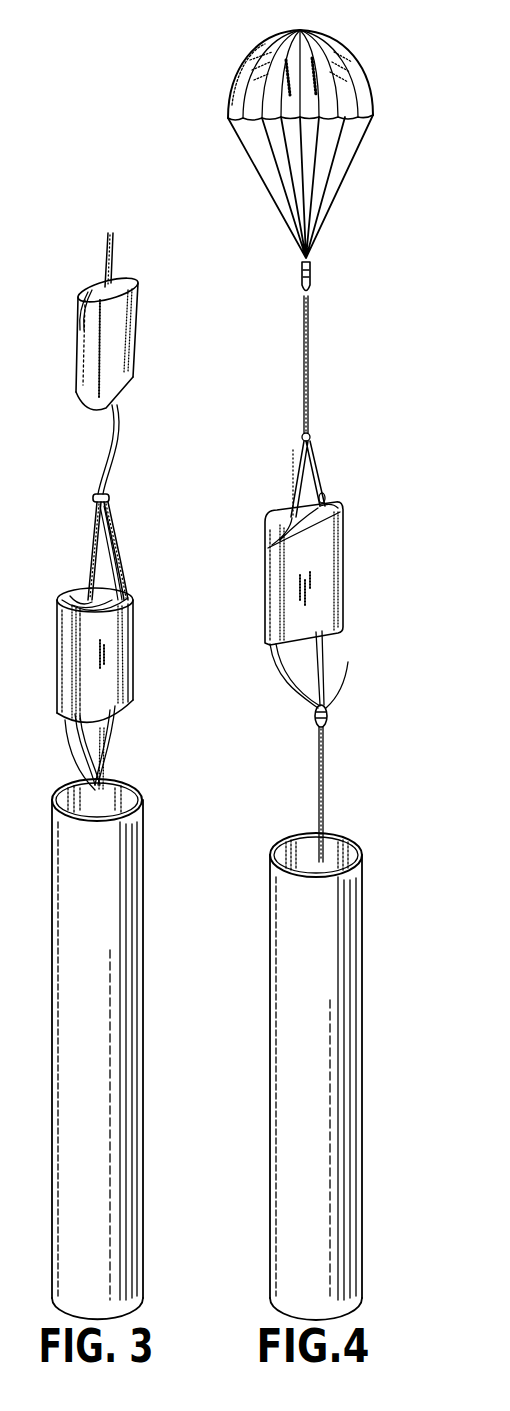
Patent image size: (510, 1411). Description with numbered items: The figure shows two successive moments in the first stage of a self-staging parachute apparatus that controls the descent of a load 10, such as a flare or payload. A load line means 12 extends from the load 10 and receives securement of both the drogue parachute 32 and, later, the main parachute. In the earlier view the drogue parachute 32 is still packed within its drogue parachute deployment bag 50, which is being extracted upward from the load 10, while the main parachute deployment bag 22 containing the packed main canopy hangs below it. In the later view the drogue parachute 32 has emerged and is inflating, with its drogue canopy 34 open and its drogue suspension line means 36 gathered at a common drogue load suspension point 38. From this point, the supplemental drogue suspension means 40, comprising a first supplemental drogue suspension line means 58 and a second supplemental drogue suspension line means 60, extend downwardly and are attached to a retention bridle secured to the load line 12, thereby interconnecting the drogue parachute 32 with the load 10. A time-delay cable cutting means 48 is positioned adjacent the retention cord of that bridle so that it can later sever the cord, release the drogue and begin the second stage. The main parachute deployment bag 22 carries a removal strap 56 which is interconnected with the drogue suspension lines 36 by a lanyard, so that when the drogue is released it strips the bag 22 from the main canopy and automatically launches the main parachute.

In FIG. 4, the load 10 is at (274, 964).
In FIG. 3, the load 10 is at (65, 967).
In FIG. 4, the load line means 12 is at (324, 782).
In FIG. 3, the load line means 12 is at (120, 790).
In FIG. 4, the main parachute deployment bag 22 is at (270, 608).
In FIG. 3, the main parachute deployment bag 22 is at (58, 670).
In FIG. 4, the drogue parachute 32 is at (320, 70).
In FIG. 4, the drogue canopy 34 is at (238, 72).
In FIG. 4, the drogue suspension line means 36 is at (328, 172).
In FIG. 4, the common drogue load suspension point 38 is at (318, 268).
In FIG. 3, the common drogue load suspension point 38 is at (110, 495).
In FIG. 3, the supplemental drogue suspension means 40 is at (118, 555).
In FIG. 3, the time-delay cable cutting means 48 is at (136, 632).
In FIG. 3, the drogue parachute deployment bag 50 is at (137, 342).
In FIG. 4, the removal strap 56 is at (288, 512).
In FIG. 3, the removal strap 56 is at (72, 600).
In FIG. 3, the first supplemental drogue suspension line means 58 is at (92, 540).
In FIG. 3, the second supplemental drogue suspension line means 60 is at (112, 528).